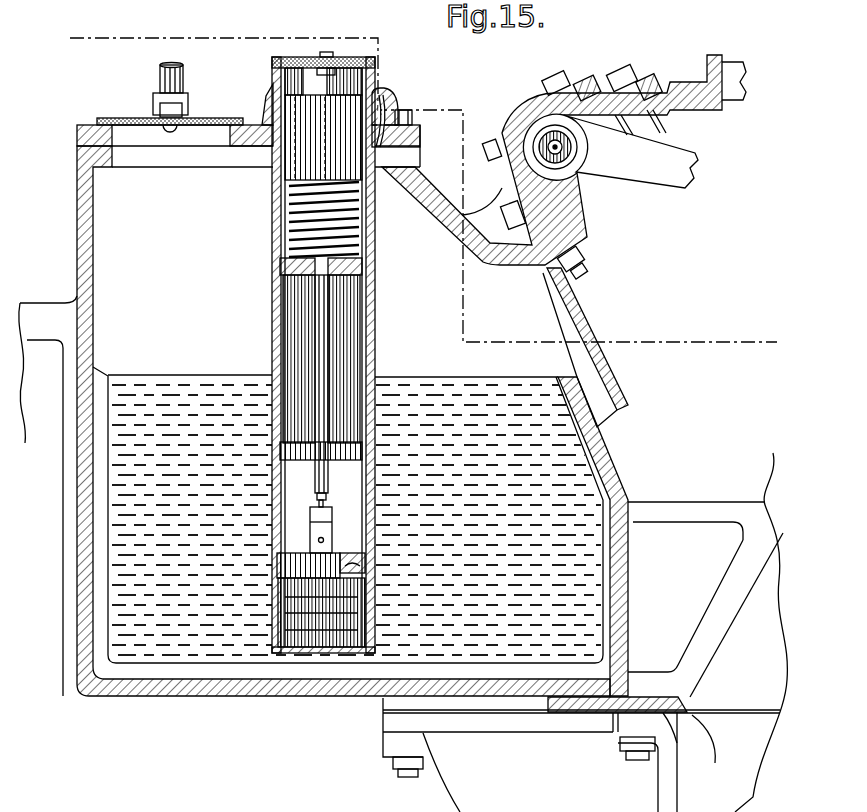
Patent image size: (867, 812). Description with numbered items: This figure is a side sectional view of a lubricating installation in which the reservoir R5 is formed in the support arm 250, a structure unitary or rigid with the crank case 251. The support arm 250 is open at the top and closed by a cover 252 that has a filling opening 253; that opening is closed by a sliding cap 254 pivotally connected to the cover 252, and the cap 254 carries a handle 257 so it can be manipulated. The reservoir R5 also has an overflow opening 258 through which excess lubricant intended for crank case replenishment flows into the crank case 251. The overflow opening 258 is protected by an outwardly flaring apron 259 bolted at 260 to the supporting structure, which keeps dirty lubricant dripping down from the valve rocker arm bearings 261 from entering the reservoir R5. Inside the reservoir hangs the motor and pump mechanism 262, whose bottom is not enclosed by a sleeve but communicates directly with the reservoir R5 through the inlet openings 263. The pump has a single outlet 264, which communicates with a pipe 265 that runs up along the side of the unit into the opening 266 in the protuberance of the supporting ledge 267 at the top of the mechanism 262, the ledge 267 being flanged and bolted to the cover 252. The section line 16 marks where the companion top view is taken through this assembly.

The section line 16— 16 is at (73, 22).
The reservoir R5 is at (77, 537).
The support arm 250 is at (242, 694).
The crank case 251 is at (616, 468).
The cover 252 is at (90, 125).
The filling opening 253 is at (213, 133).
The sliding cap 254 is at (193, 119).
The handle 257 is at (162, 79).
The overflow opening 258 is at (570, 364).
The outwardly flaring apron 259 is at (583, 325).
The bolt 260 is at (580, 262).
The valve rocker arm bearings 261 is at (563, 163).
The motor and pump mechanism 262 is at (277, 317).
The inlet openings 263 is at (367, 597).
The outlet 264 is at (367, 571).
The pipe 265 is at (377, 315).
The opening 266 is at (398, 111).
The supporting ledge 267 is at (379, 93).